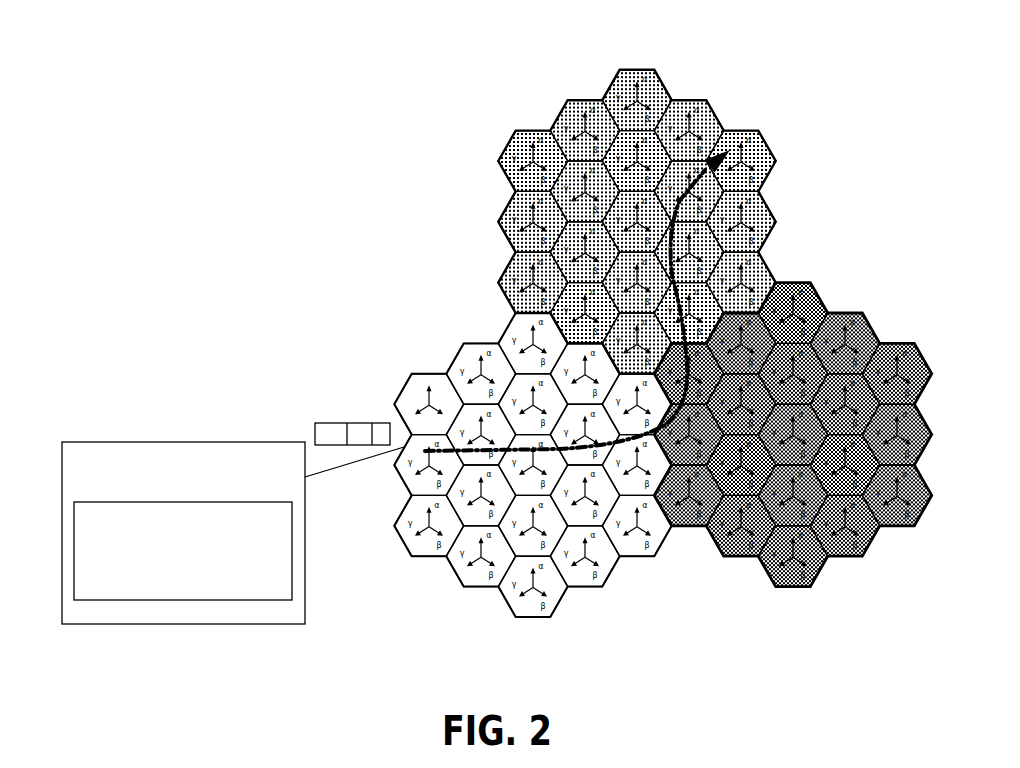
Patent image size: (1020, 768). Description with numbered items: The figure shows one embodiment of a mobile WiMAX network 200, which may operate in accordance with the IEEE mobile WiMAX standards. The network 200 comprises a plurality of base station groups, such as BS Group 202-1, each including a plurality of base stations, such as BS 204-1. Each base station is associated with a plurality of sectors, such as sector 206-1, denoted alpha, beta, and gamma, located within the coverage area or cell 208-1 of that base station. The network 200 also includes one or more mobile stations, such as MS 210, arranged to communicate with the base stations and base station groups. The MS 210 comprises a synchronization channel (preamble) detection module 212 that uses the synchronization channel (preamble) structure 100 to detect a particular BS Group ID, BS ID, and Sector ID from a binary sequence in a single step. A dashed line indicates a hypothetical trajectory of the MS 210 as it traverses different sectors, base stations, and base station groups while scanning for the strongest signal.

The mobile WiMAX network 200 is at (482, 39).
The BS Group 202-1 is at (394, 622).
The BS 204-1 is at (440, 412).
The sector 206-1 is at (442, 373).
The cell 208-1 is at (407, 362).
The synchronization channel (preamble) structure 100 is at (350, 422).
The MS 210 is at (183, 533).
The synchronization channel (preamble) detection module 212 is at (169, 592).